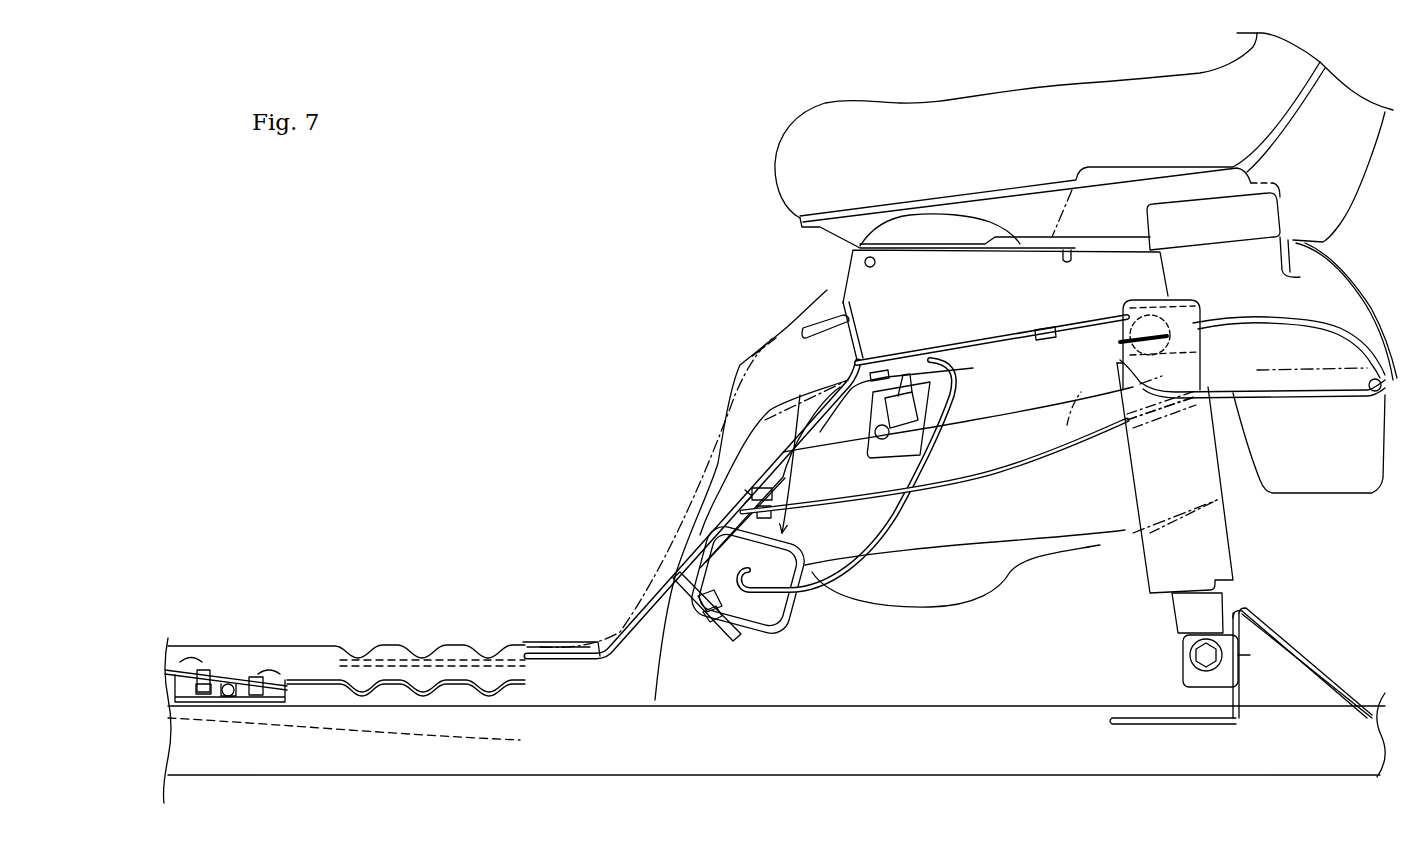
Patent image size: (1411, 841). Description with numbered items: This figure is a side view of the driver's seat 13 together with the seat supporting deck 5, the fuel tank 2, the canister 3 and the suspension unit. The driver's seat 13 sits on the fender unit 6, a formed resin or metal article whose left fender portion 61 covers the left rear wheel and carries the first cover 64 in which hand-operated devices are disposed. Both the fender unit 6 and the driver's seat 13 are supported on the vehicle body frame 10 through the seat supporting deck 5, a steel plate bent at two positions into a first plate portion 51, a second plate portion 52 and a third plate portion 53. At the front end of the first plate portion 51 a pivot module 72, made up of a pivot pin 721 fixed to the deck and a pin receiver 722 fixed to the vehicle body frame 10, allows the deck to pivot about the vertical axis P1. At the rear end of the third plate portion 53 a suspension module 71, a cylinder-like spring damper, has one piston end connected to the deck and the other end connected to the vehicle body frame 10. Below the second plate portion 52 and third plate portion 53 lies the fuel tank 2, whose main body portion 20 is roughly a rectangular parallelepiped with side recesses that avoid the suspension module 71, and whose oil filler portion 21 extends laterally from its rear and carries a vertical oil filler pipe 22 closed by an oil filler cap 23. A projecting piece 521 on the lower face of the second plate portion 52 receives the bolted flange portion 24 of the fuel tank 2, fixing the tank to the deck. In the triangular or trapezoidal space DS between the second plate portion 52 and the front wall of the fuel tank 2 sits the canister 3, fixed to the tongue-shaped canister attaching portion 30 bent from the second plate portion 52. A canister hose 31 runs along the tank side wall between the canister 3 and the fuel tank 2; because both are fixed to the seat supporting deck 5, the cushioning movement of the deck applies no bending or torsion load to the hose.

The fuel tank 2 is at (1250, 503).
The canister 3 is at (778, 600).
The seat supporting deck 5 is at (668, 499).
The fender unit 6 is at (346, 645).
The vehicle body frame 10 is at (993, 700).
The driver's seat 13 is at (780, 175).
The main body portion 20 is at (1070, 540).
The oil filler portion 21 is at (1332, 270).
The oil filler pipe 22 is at (1167, 273).
The oil filler cap 23 is at (1147, 222).
The flange portion 24 is at (970, 487).
The canister attaching portion 30 is at (703, 588).
The canister hose 31 is at (893, 533).
The first plate portion 51 is at (528, 650).
The second plate portion 52 is at (705, 535).
The third plate portion 53 is at (945, 350).
The left fender portion 61 is at (1066, 426).
The first cover 64 is at (780, 332).
The suspension module 71 is at (1147, 573).
The pivot module 72 is at (236, 676).
The pivot pin 721 is at (225, 698).
The pin receiver 722 is at (244, 677).
The projecting piece 521 is at (747, 495).
The space DS is at (799, 435).
The vertical axis P1 is at (240, 700).